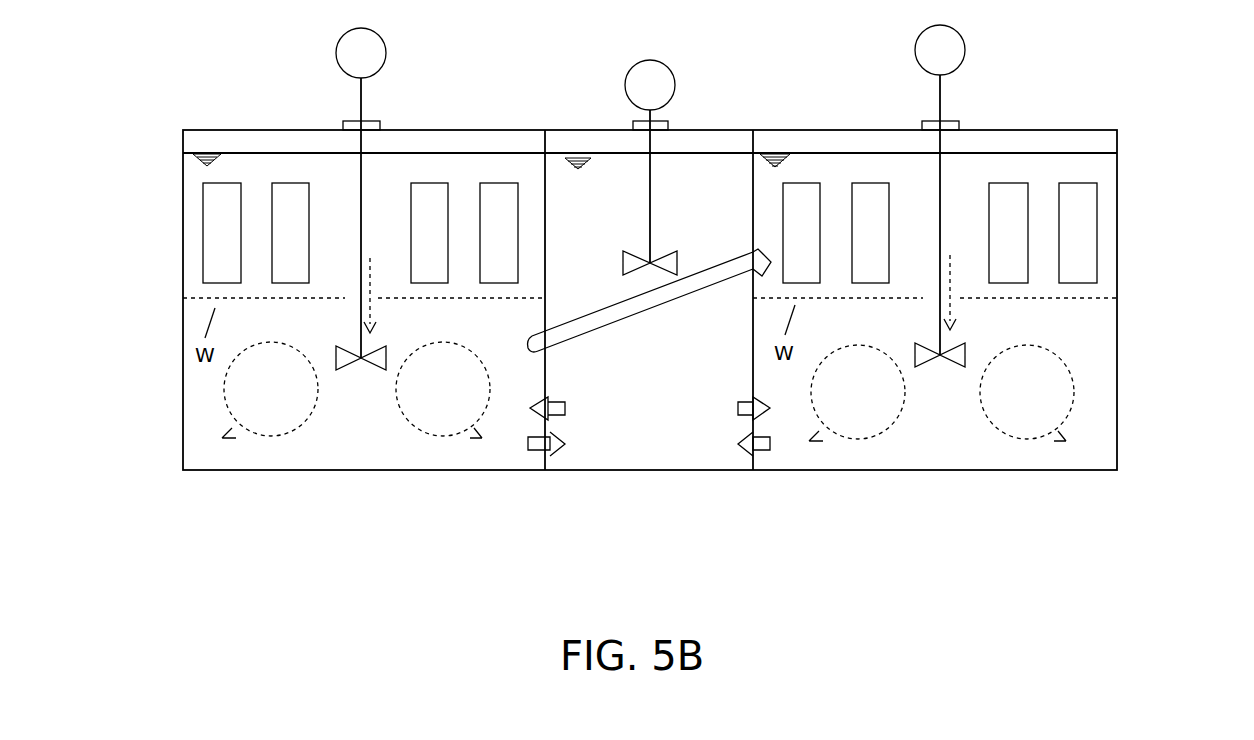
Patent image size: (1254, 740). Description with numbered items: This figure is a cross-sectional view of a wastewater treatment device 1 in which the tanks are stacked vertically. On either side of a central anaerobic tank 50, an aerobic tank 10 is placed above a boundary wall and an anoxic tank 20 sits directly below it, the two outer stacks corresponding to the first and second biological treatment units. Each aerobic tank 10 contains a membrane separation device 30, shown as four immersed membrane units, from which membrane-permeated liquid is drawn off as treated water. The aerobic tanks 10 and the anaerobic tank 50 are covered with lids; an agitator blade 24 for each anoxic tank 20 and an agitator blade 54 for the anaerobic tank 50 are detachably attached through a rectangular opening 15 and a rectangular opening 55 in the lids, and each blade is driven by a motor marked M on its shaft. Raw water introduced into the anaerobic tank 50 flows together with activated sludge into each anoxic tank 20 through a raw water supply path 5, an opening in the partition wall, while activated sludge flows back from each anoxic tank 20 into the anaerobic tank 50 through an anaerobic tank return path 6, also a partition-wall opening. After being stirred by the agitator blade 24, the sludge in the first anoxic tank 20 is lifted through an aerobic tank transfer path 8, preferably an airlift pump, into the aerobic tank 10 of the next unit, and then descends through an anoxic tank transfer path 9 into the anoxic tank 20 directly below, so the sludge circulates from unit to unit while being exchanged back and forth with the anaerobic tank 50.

The wastewater treatment device 1 is at (754, 95).
The raw water supply path 5 is at (557, 402).
The anaerobic tank return path 6 is at (556, 448).
The aerobic tank transfer path 8 is at (688, 300).
The anoxic tank transfer path 9 is at (357, 290).
The aerobic tank 10 is at (193, 272).
The rectangular opening 15 is at (375, 120).
The anoxic tank 20 is at (402, 464).
The agitator blade 24 is at (347, 372).
The membrane separation device 30 is at (225, 193).
The anaerobic tank 50 is at (663, 449).
The agitator blade 54 is at (662, 258).
The rectangular opening 55 is at (670, 120).